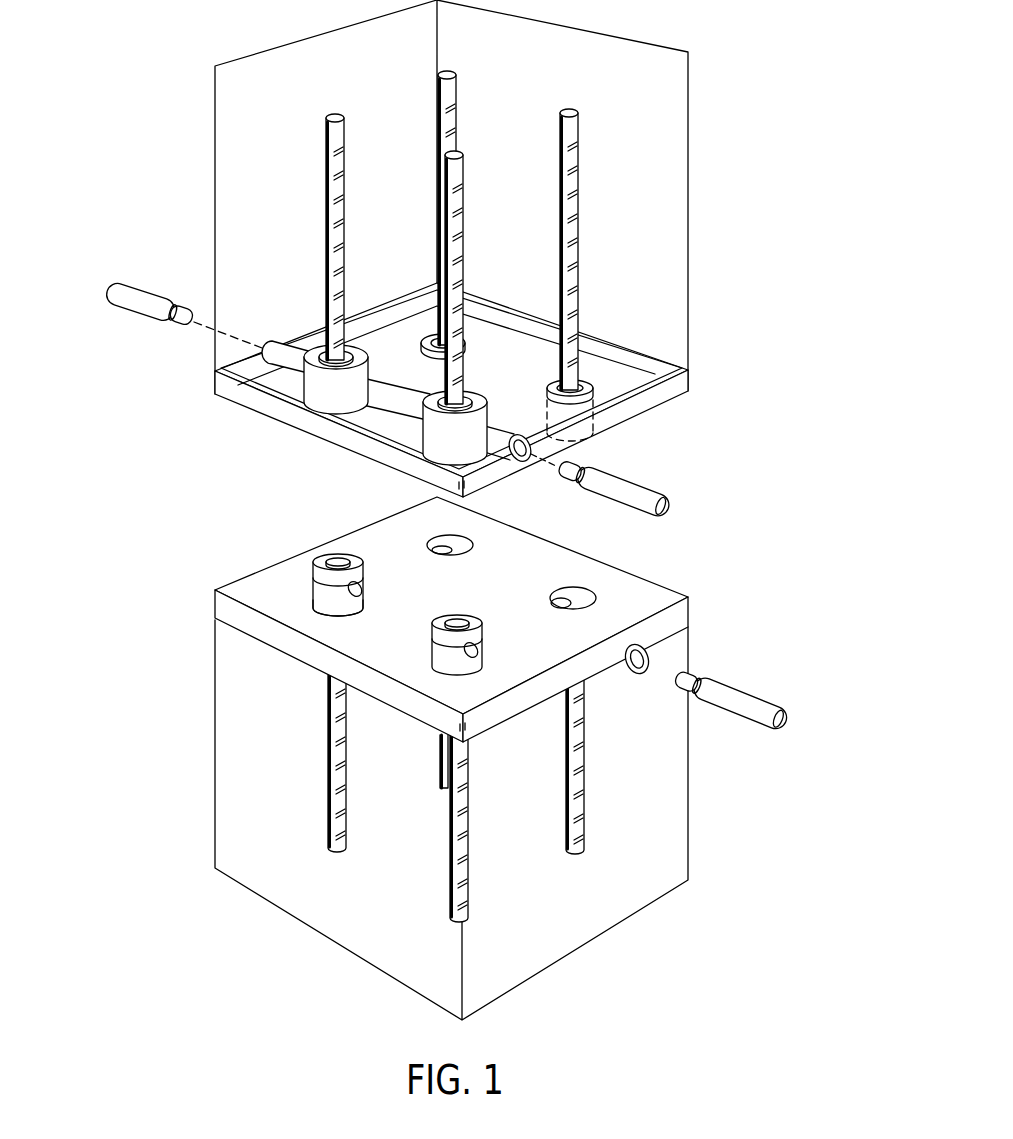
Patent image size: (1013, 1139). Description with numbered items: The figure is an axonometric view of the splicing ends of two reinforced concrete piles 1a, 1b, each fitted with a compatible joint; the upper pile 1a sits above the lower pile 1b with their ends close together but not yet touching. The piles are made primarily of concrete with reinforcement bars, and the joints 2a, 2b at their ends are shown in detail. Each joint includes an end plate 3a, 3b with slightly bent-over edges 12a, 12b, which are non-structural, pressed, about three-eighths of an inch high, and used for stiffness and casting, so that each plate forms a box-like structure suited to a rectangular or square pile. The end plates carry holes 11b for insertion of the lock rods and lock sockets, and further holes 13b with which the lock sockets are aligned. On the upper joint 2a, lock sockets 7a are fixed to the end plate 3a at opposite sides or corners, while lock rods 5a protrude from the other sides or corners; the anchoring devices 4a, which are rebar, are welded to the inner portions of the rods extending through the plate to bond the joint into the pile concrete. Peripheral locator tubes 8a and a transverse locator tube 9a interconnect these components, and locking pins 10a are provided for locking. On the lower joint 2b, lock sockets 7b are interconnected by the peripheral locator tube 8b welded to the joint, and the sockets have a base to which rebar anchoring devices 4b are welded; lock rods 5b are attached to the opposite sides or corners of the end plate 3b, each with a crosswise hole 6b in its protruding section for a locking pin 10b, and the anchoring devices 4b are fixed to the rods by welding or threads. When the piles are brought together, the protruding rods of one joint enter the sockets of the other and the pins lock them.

The reinforced concrete pile 1a is at (691, 148).
The joint 2a is at (417, 259).
The end plate 3a is at (504, 360).
The anchoring devices 4a is at (462, 95).
The lock rods 5a is at (648, 396).
The lock sockets 7a is at (478, 392).
The peripheral locator tubes 8a is at (283, 392).
The transverse locator tube 9a is at (380, 417).
The locking pins 10a is at (140, 308).
The edges 12a is at (692, 378).
The reinforced concrete pile 1b is at (690, 831).
The joint 2b is at (466, 758).
The end plate 3b is at (507, 619).
The anchoring devices 4b is at (467, 890).
The lock rods 5b is at (372, 597).
The crosswise hole 6b is at (360, 590).
The lock sockets 7b is at (592, 633).
The peripheral locator tube 8b is at (560, 607).
The locking pins 10b is at (748, 697).
The holes 11b is at (325, 608).
The edges 12b is at (693, 613).
The holes 13b is at (473, 541).